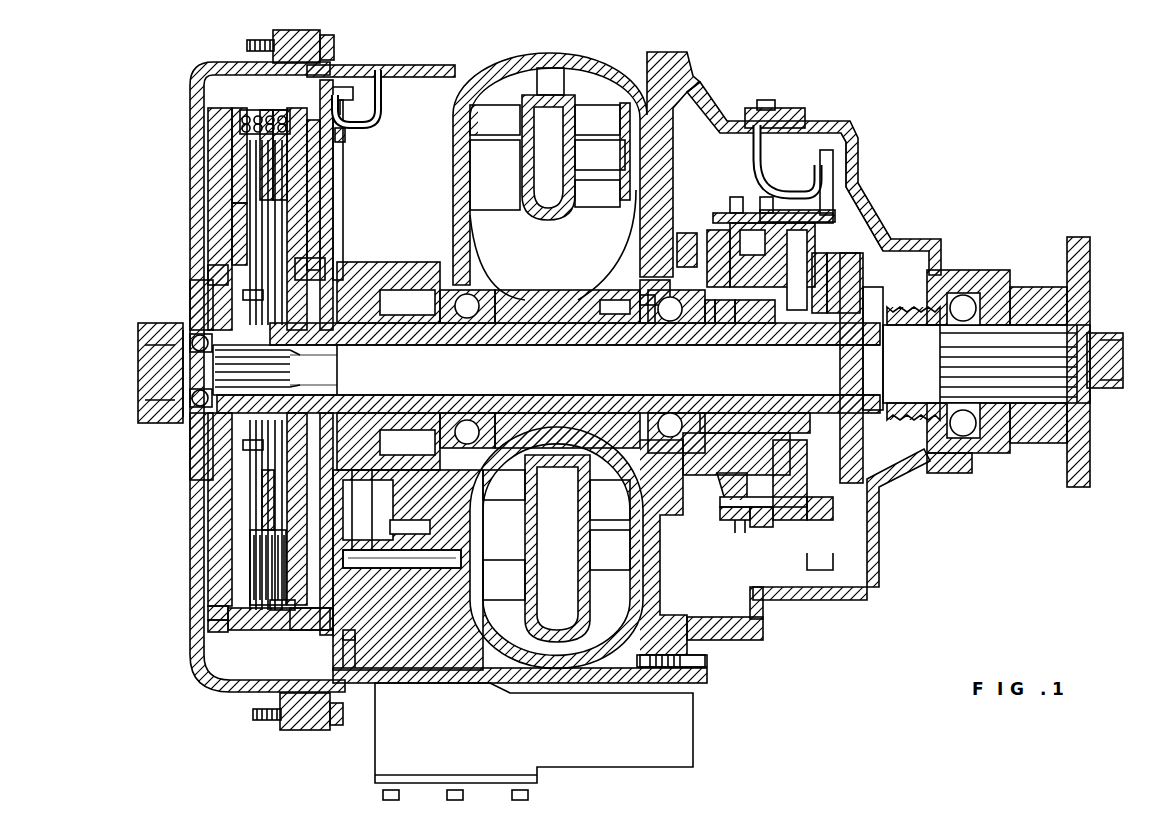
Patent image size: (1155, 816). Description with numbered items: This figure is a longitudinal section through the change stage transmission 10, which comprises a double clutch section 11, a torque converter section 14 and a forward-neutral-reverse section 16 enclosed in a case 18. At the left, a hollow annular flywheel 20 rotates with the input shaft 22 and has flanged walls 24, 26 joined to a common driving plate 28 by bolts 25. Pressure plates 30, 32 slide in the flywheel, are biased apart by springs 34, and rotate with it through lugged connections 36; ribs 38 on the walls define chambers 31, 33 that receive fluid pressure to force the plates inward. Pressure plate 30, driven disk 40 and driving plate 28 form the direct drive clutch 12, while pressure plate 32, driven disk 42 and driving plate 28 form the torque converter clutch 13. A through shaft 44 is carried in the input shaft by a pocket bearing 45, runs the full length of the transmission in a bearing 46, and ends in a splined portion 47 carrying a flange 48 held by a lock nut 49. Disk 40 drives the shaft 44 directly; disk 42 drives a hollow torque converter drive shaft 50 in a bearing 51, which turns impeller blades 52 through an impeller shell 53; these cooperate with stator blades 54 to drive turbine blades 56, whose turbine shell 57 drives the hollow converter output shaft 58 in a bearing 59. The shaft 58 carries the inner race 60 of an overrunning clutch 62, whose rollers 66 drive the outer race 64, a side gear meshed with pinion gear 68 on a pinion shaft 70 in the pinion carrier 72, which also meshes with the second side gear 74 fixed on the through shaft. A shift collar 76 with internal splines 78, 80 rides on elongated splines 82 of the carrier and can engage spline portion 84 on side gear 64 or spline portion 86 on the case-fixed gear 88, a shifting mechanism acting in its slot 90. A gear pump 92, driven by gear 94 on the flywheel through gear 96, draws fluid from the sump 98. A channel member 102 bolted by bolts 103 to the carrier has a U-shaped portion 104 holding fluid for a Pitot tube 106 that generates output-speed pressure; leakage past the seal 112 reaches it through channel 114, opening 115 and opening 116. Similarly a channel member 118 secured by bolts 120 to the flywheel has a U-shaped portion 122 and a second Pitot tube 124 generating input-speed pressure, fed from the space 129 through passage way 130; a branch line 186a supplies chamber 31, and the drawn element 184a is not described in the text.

The transmission 10 is at (808, 100).
The double clutch section 11 is at (180, 192).
The direct drive clutch 12 is at (245, 615).
The torque converter clutch 13 is at (295, 612).
The torque converter section 14 is at (495, 55).
The forward-neutral-reverse section 16 is at (862, 214).
The case 18 is at (688, 66).
The flywheel 20 is at (262, 630).
The input shaft 22 is at (145, 400).
The flanged wall 24 is at (215, 222).
The bolts 25 is at (208, 612).
The flanged wall 26 is at (333, 218).
The driving plate 28 is at (262, 520).
The pressure plate 30 is at (232, 548).
The chamber 31 is at (232, 153).
The pressure plate 32 is at (305, 240).
The chamber 33 is at (315, 154).
The springs 34 is at (282, 112).
The lugged connections 36 is at (253, 103).
The circumferential rib 38 is at (208, 268).
The driven disk 40 is at (240, 207).
The driven disk 42 is at (292, 208).
The through shaft 44 is at (546, 370).
The pocket bearing 45 is at (195, 410).
The bearing 46 is at (960, 290).
The splined portion 47 is at (965, 360).
The flange 48 is at (1085, 450).
The lock nut 49 is at (1098, 345).
The torque converter drive shaft 50 is at (462, 338).
The bearing 51 is at (470, 420).
The impeller blades 52 is at (577, 408).
The impeller shell 53 is at (496, 280).
The stator blades 54 is at (556, 86).
The turbine blades 56 is at (577, 408).
The turbine shell 57 is at (612, 262).
The converter output shaft 58 is at (580, 330).
The bearing 59 is at (680, 418).
The inner race 60 is at (778, 322).
The overrunning clutch 62 is at (722, 320).
The outer race 64 is at (718, 230).
The driving rollers 66 is at (742, 322).
The pinion gear 68 is at (822, 262).
The pinion shaft 70 is at (834, 320).
The pinion carrier 72 is at (780, 520).
The second side gear 74 is at (860, 270).
The shift collar 76 is at (726, 520).
The internal splines 78 is at (798, 520).
The internal splines 80 is at (720, 500).
The elongated splines 82 is at (740, 485).
The peripheral spline portion 84 is at (718, 213).
The peripheral spline portion 86 is at (684, 233).
The gear 88 is at (683, 460).
The peripheral slot 90 is at (762, 530).
The gear pump 92 is at (430, 610).
The gear 94 is at (370, 470).
The gear 96 is at (372, 568).
The sump 98 is at (680, 736).
The channel member 102 is at (850, 550).
The bolts 103 is at (840, 202).
The U-shaped peripheral portion 104 is at (812, 140).
The Pitot tube 106 is at (800, 185).
The seal 112 is at (625, 320).
The channel 114 is at (650, 280).
The opening 115 is at (695, 330).
The opening 116 is at (700, 420).
The channel member 118 is at (333, 96).
The bolts 120 is at (347, 133).
The U-shaped peripheral portion 122 is at (355, 670).
The second Pitot tube 124 is at (383, 97).
The space 129 is at (270, 498).
The passage way 130 is at (290, 630).
The plate 184a is at (320, 172).
The branch line 186a is at (230, 120).